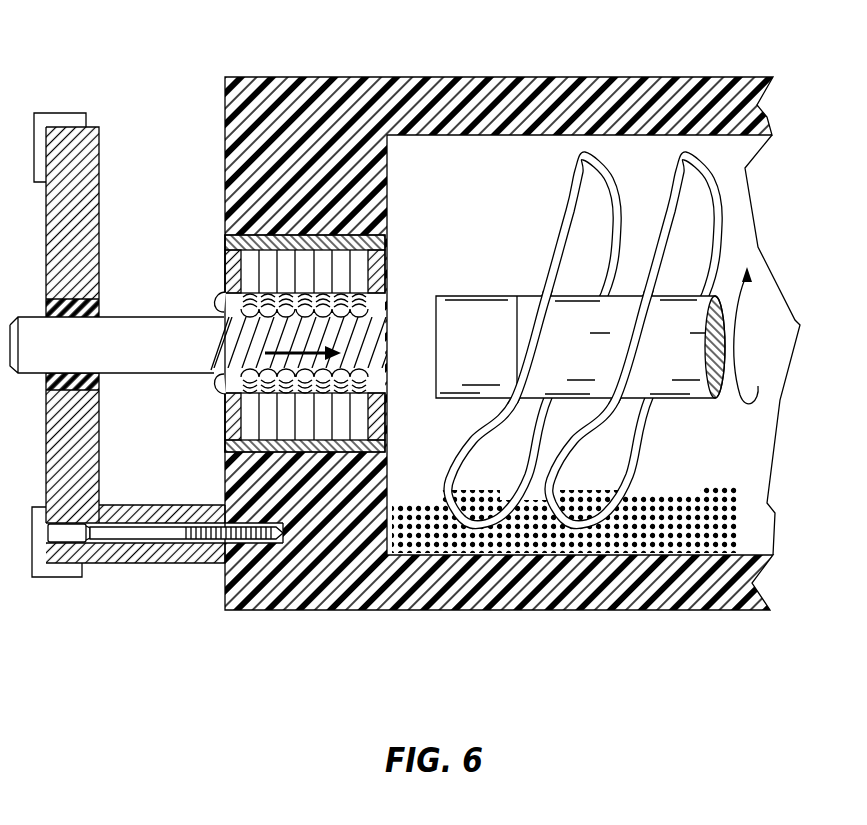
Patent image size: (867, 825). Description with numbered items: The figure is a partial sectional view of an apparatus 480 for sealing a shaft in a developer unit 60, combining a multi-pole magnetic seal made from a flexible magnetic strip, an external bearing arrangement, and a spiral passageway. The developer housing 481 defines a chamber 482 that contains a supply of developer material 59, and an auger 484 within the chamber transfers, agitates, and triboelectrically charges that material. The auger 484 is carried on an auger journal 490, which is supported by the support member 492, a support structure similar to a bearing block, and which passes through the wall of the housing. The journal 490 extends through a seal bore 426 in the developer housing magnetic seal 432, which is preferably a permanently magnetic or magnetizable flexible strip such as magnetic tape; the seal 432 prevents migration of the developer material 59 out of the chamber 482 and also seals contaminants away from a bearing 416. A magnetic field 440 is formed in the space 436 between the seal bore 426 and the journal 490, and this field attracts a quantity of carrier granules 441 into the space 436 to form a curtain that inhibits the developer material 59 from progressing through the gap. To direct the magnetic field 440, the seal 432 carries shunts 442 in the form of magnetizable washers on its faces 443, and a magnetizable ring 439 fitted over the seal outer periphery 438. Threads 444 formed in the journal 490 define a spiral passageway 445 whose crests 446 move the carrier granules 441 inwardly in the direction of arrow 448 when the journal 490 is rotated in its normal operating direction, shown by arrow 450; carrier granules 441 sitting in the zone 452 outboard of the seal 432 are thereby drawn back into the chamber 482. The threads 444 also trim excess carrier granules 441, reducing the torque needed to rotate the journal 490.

The developer unit 60 is at (217, 67).
The apparatus 480 is at (270, 61).
The developer housing 481 is at (707, 90).
The chamber 482 is at (759, 535).
The auger 484 is at (736, 222).
The bearing 416 is at (70, 291).
The support member 492 is at (110, 626).
The auger journal 490 is at (173, 315).
The threads 444 is at (222, 318).
The carrier granules 441 is at (378, 360).
The arrow 448 is at (355, 365).
The zone 452 is at (222, 296).
The seal bore 426 is at (360, 302).
The magnetic field 440 is at (374, 318).
The crests 446 is at (367, 378).
The spiral passageway 445 is at (206, 386).
The space 436 is at (384, 391).
The faces 443 is at (231, 408).
The shunts 442 is at (231, 432).
The seal outer periphery 438 is at (298, 455).
The magnetizable ring 439 is at (336, 455).
The developer housing magnetic seal 432 is at (406, 292).
The arrow 450 is at (733, 363).
The developer material 59 is at (720, 493).